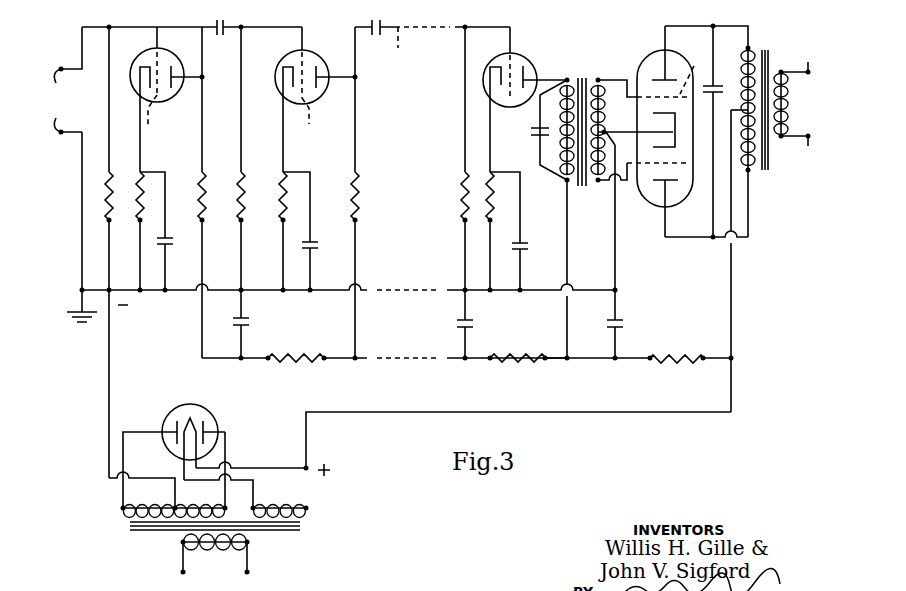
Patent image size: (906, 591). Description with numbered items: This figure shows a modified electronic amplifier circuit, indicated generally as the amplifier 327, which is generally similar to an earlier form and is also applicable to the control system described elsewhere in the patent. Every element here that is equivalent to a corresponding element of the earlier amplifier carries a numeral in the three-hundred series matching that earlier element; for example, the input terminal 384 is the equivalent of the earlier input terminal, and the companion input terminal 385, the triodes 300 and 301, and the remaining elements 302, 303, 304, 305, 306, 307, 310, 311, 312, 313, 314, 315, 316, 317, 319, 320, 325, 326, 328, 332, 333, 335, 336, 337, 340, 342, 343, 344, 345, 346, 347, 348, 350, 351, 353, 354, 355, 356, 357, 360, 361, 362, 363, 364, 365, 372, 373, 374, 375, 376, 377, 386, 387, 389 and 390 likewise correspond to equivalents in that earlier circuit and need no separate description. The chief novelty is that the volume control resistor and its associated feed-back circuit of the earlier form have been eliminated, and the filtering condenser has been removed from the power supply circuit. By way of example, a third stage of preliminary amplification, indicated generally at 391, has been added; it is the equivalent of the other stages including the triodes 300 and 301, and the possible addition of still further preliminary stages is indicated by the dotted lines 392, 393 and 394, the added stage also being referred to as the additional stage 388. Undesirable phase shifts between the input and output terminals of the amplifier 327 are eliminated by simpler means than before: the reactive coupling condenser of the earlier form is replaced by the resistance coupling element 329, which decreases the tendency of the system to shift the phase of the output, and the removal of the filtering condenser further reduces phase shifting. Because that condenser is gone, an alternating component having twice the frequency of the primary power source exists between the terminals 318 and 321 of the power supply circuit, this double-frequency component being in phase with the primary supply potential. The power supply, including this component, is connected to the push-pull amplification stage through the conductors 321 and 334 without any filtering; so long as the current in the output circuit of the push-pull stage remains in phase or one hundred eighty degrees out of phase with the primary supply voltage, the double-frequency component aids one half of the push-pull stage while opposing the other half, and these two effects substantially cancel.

The triode 300 is at (160, 50).
The triode 301 is at (322, 53).
The output tube 302 is at (648, 57).
The rectifier tube 303 is at (205, 412).
The power transformer 304 is at (303, 527).
The primary winding 305 is at (210, 549).
The high voltage secondary winding 306 is at (165, 500).
The filament winding 307 is at (290, 508).
The rectifier plate 310 is at (173, 425).
The rectifier plate 311 is at (208, 425).
The rectifier filament 312 is at (188, 410).
The conductor 313 is at (125, 452).
The conductor 314 is at (227, 443).
The conductor 315 is at (242, 483).
The conductor 316 is at (242, 467).
The center tap conductor 317 is at (178, 506).
The power supply terminal 318 is at (108, 398).
The ground conductor 319 is at (82, 251).
The ground 320 is at (82, 322).
The power supply conductor 321 is at (307, 433).
The plate of tube 300 325 is at (178, 90).
The cathode of tube 300 326 is at (150, 67).
The electronic amplifier 327 is at (505, 20).
The heater of tube 300 328 is at (163, 119).
The resistance coupling element 329 is at (107, 182).
The cathode resistor 332 is at (140, 200).
The cathode bypass capacitor 333 is at (168, 231).
The conductor 334 is at (185, 292).
The conductor 335 is at (722, 364).
The resistor 336 is at (672, 355).
The conductor 337 is at (580, 360).
The resistor 340 is at (293, 362).
The grid resistor 342 is at (210, 188).
The coupling capacitor 343 is at (230, 26).
The filter capacitor 344 is at (249, 326).
The plate resistor 345 is at (250, 188).
The plate of tube 301 346 is at (318, 88).
The heater of tube 301 347 is at (321, 115).
The cathode of tube 301 348 is at (293, 63).
The cathode resistor 350 is at (300, 191).
The cathode bypass capacitor 351 is at (313, 242).
The tuning capacitor 353 is at (538, 138).
The primary winding 354 is at (560, 117).
The transformer core 355 is at (589, 145).
The secondary winding portion 356 is at (604, 110).
The secondary winding portion 357 is at (605, 131).
The plate of tube 302 360 is at (671, 70).
The heater of tube 302 361 is at (656, 181).
The screen grid connection 362 is at (698, 70).
The grid of tube 302 363 is at (674, 162).
The grid of tube 302 364 is at (676, 113).
The conductor 365 is at (619, 78).
The center tap 372 is at (745, 110).
The primary winding 373 is at (735, 108).
The transformer core 374 is at (767, 172).
The conductor 375 is at (722, 25).
The conductor 376 is at (695, 239).
The secondary winding 377 is at (792, 98).
The input terminal 384 is at (72, 59).
The input terminal 385 is at (69, 119).
The output terminal 386 is at (801, 59).
The output terminal 387 is at (801, 151).
The additional stage 388 is at (182, 572).
The supply terminal 389 is at (248, 572).
The capacitor 390 is at (730, 84).
The third stage of preliminary amplification 391 is at (520, 145).
The dotted line 392 is at (402, 44).
The dotted line 393 is at (394, 290).
The dotted line 394 is at (394, 355).